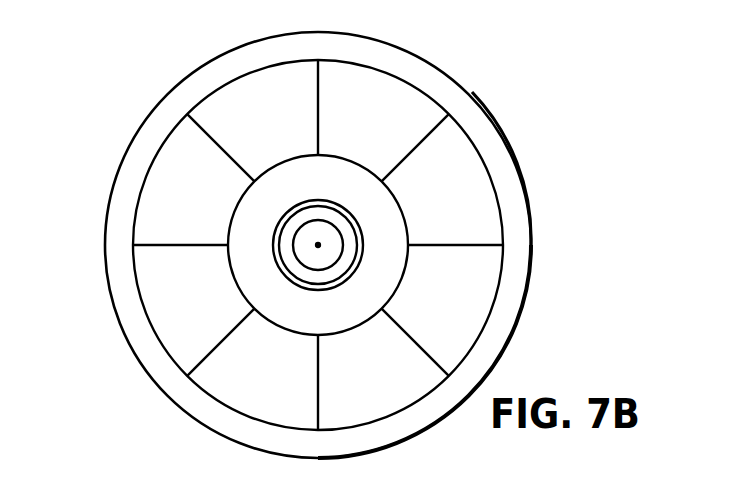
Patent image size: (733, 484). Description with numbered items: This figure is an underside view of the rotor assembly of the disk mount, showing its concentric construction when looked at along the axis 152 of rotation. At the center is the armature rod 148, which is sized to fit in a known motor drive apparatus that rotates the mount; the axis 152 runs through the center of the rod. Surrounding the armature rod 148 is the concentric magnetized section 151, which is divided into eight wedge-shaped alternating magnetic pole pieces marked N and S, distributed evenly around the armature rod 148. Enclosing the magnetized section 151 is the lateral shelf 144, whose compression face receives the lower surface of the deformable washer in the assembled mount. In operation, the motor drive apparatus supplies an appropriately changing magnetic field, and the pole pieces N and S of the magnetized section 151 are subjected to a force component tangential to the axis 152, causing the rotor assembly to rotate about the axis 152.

The lateral shelf 144 is at (503, 135).
The magnetized section 151 is at (425, 92).
The armature rod 148 is at (295, 227).
The axis 152 is at (318, 245).